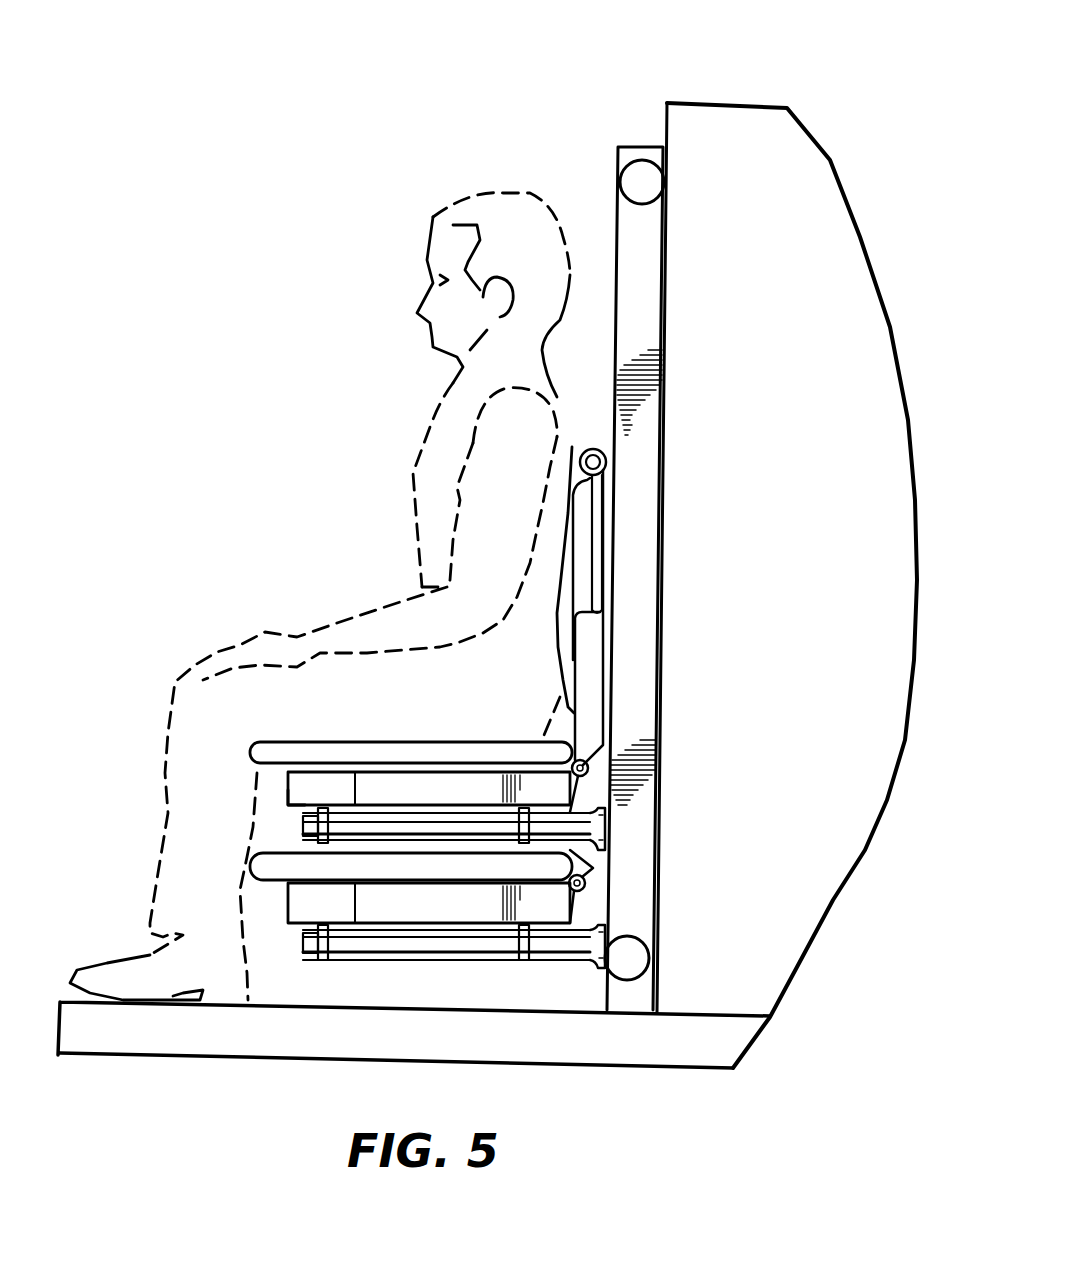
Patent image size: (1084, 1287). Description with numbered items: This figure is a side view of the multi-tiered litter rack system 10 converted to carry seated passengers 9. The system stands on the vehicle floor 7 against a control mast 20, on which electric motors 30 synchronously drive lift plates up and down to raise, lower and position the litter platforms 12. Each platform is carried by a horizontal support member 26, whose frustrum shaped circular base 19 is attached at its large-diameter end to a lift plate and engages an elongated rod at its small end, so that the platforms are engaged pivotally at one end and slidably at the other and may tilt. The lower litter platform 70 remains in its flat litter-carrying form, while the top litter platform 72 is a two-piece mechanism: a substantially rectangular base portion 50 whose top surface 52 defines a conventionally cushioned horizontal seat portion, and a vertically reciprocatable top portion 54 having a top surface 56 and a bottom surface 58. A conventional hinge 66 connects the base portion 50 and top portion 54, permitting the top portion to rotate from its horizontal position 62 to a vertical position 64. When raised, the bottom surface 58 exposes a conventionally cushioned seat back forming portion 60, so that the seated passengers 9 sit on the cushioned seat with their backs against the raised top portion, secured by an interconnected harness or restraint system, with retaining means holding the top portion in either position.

The vehicle floor 7 is at (247, 1047).
The seated passengers 9 is at (433, 217).
The multi-tiered litter rack system 10 is at (745, 103).
The litter platforms 12 is at (258, 834).
The frustrum shaped circular base 19 is at (605, 820).
The control mast 20 is at (640, 147).
The horizontal support member 26 is at (578, 850).
The electric motors 30 is at (628, 178).
The base portion 50 is at (330, 775).
The top surface 52 is at (415, 770).
The vertically reciprocatable top portion 54 is at (607, 462).
The top surface 56 is at (607, 547).
The bottom surface 58 is at (558, 612).
The seat back forming portion 60 is at (568, 560).
The horizontal position 62 is at (250, 867).
The vertical position 64 is at (592, 447).
The hinge 66 is at (592, 748).
The lower litter platform 70 is at (273, 883).
The top litter platform 72 is at (300, 806).